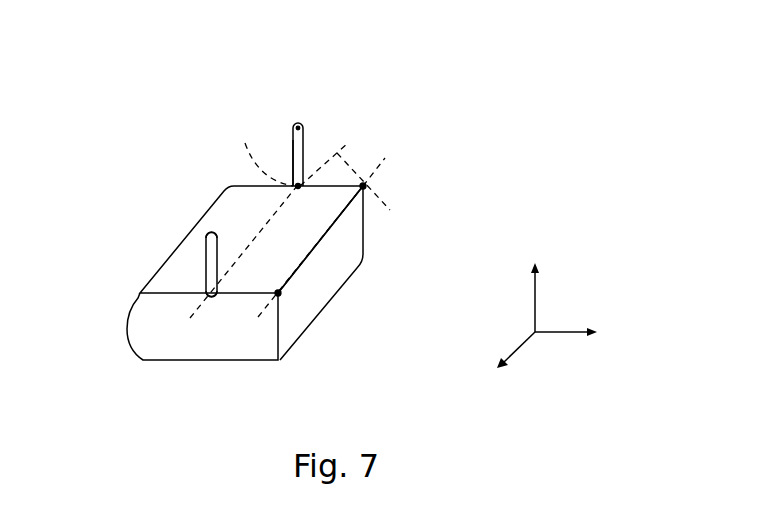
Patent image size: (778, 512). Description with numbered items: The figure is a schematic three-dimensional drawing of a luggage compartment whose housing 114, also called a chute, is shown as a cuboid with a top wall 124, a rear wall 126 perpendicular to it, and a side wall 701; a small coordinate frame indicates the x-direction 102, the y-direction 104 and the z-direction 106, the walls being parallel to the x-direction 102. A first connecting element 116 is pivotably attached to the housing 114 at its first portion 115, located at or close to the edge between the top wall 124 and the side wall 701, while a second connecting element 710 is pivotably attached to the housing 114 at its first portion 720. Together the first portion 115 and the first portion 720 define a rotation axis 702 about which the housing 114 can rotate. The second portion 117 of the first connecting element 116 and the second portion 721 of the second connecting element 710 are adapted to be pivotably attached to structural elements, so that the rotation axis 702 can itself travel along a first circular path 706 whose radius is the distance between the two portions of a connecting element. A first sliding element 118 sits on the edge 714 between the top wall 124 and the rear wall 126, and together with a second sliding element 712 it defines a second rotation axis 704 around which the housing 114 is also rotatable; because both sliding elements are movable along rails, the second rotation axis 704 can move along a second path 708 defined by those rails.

The x-direction 102 is at (517, 347).
The y-direction 104 is at (570, 335).
The z-direction 106 is at (537, 292).
The housing 114 is at (153, 327).
The first portion of the first connecting element 115 is at (208, 298).
The first connecting element 116 is at (207, 250).
The second portion of the first connecting element 117 is at (208, 235).
The first sliding element 118 is at (282, 294).
The top wall 124 is at (237, 207).
The rear wall 126 is at (293, 325).
The side wall 701 is at (245, 313).
The rotation axis 702 is at (310, 170).
The second rotation axis 704 is at (387, 172).
The first circular path 706 is at (255, 163).
The second path 708 is at (362, 172).
The second connecting element 710 is at (292, 178).
The second sliding element 712 is at (368, 187).
The edge 714 is at (320, 245).
The first portion of the second connecting element 720 is at (302, 186).
The second portion of the second connecting element 721 is at (297, 125).